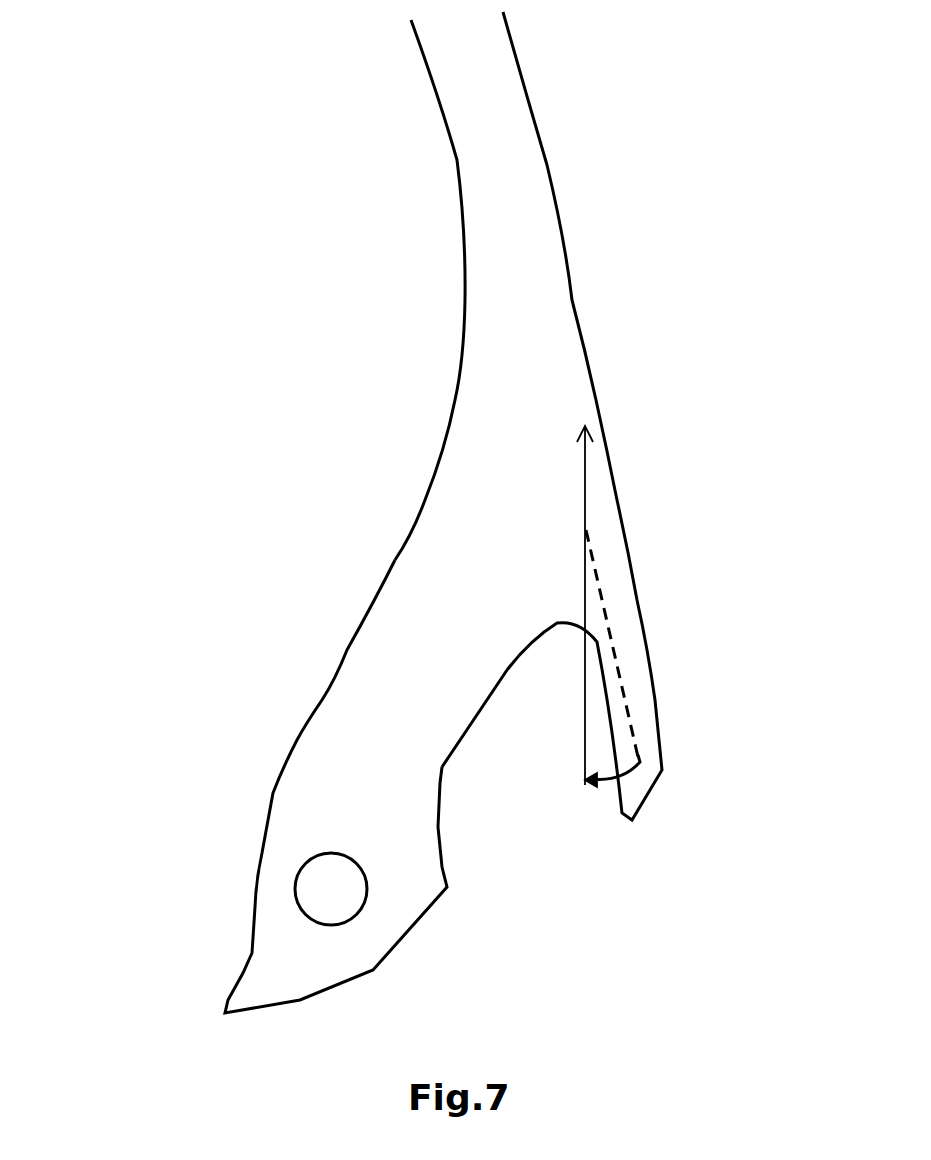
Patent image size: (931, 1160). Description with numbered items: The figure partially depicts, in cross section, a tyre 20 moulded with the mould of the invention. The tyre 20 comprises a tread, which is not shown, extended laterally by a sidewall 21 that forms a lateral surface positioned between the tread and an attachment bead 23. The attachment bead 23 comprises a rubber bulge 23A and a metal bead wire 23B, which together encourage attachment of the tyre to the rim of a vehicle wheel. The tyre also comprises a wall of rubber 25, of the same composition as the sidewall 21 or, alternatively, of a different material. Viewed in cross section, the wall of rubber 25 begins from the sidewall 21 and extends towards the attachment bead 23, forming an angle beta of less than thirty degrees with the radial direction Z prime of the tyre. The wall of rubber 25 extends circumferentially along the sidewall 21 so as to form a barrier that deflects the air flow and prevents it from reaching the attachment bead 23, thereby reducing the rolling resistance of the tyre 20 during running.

The tyre 20 is at (282, 113).
The sidewall 21 is at (547, 166).
The attachment bead 23 is at (127, 739).
The rubber bulge 23A is at (283, 865).
The metal bead wire 23B is at (338, 885).
The wall of rubber 25 is at (660, 697).